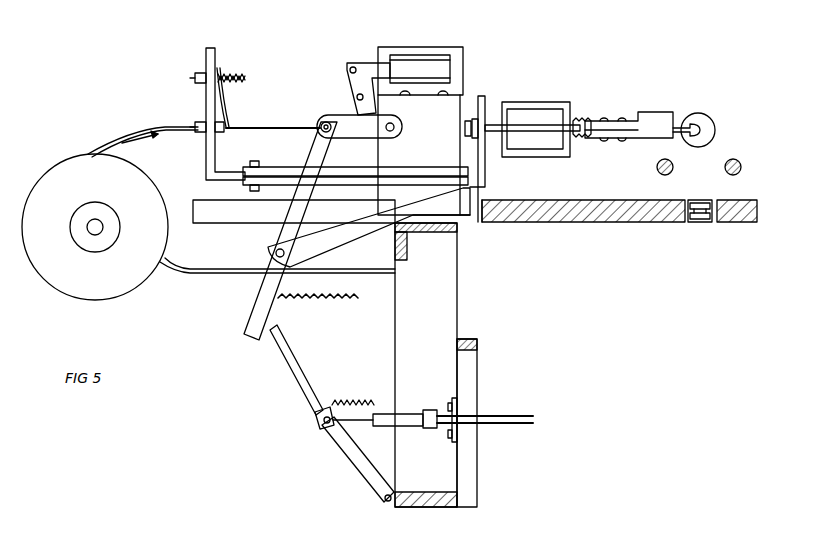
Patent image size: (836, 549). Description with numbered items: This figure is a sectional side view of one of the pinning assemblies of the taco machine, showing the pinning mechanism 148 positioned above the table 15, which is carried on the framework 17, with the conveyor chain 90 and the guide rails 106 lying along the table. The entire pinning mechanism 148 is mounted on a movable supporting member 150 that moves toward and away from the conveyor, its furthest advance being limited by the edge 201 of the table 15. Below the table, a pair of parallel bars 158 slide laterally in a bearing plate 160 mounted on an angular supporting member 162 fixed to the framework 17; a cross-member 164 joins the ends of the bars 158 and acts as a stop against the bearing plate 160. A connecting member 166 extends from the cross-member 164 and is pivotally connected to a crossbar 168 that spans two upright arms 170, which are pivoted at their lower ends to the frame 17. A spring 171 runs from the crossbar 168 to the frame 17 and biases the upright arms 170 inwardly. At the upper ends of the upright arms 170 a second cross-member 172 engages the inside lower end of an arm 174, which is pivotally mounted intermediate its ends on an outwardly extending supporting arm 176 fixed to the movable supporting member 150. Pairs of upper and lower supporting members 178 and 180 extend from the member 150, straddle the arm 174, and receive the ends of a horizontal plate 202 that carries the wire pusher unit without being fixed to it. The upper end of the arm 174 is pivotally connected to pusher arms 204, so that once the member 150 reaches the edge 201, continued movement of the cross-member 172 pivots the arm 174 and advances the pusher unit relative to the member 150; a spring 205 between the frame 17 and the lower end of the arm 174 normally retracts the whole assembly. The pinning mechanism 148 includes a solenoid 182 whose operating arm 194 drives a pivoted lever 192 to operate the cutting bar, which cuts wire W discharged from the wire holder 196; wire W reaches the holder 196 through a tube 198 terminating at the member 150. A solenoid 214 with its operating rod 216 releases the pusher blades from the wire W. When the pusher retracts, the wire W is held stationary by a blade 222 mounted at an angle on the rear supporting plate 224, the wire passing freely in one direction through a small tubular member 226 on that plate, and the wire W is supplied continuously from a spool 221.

The table 15 is at (588, 222).
The framework 17 is at (458, 300).
The conveyor chain 90 is at (700, 222).
The guide rails 106 is at (657, 164).
The pinning mechanism 148 is at (566, 72).
The movable supporting member 150 is at (468, 222).
The parallel bars 158 is at (528, 414).
The bearing plate 160 is at (458, 437).
The angular supporting member 162 is at (480, 345).
The cross-member 164 is at (432, 409).
The connecting member 166 is at (388, 413).
The crossbar 168 is at (316, 418).
The upright arms 170 is at (352, 458).
The spring 171 is at (352, 400).
The second cross-member 172 is at (264, 338).
The arm 174 is at (246, 317).
The supporting arm 176 is at (354, 233).
The upper supporting members 178 is at (285, 167).
The lower supporting members 180 is at (355, 176).
The solenoid 182 is at (537, 150).
The lever 192 is at (632, 120).
The operating arm 194 is at (590, 118).
The wire holder 196 is at (708, 115).
The tube 198 is at (495, 120).
The edge 201 is at (487, 222).
The horizontal plate 202 is at (438, 176).
The pusher arms 204 is at (337, 116).
The spring 205 is at (346, 300).
The solenoid 214 is at (440, 54).
The operating rod 216 is at (347, 88).
The spool 221 is at (57, 280).
The blade 222 is at (228, 106).
The rear supporting plate 224 is at (212, 48).
The tubular member 226 is at (224, 130).
The wire W is at (165, 126).